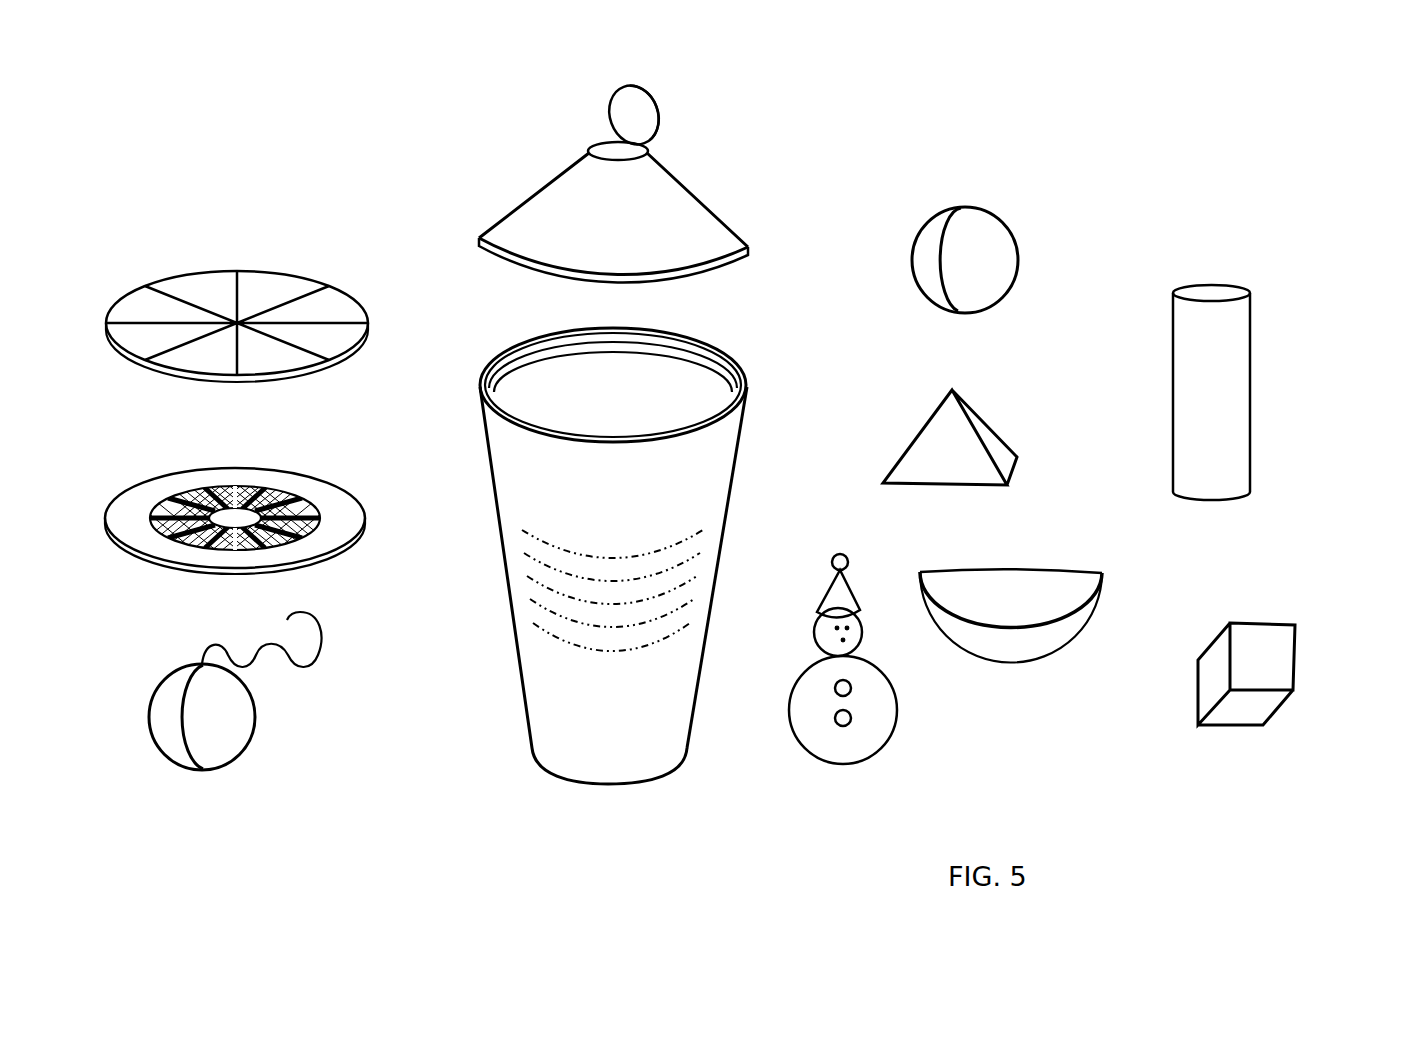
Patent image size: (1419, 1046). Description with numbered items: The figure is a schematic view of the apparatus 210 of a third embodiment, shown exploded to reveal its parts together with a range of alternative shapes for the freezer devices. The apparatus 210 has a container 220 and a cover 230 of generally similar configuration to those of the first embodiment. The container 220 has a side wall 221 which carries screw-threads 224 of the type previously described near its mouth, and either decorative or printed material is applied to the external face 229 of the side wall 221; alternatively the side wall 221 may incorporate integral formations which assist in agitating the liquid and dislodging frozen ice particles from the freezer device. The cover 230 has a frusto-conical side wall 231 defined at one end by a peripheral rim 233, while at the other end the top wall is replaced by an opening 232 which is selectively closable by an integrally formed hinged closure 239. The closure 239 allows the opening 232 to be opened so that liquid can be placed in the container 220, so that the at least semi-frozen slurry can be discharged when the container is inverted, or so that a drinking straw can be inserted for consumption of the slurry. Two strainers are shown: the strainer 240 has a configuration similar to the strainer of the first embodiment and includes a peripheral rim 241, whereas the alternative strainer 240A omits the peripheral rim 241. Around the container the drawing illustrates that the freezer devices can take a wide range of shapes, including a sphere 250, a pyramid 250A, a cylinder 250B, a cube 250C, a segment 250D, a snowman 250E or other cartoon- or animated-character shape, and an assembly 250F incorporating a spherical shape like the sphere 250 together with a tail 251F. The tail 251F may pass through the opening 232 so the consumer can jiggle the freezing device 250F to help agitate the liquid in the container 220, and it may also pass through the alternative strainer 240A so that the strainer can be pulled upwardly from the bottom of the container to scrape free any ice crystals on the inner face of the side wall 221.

The apparatus 210 is at (632, 583).
The container 220 is at (728, 503).
The side wall 221 is at (710, 590).
The screw-threads 224 is at (700, 365).
The external face 229 is at (542, 590).
The cover 230 is at (616, 155).
The frusto-conical side wall 231 is at (553, 198).
The opening 232 is at (593, 140).
The peripheral rim 233 is at (478, 250).
The hinged closure 239 is at (665, 110).
The strainer 240 is at (255, 479).
The alternative strainer 240A is at (203, 263).
The peripheral rim 241 is at (182, 483).
The sphere 250 is at (990, 262).
The pyramid 250A is at (1000, 418).
The cylinder 250B is at (1267, 343).
The cube 250C is at (1258, 643).
The segment 250D is at (1007, 598).
The snowman 250E is at (875, 713).
The assembly 250F is at (291, 734).
The tail 251F is at (322, 620).